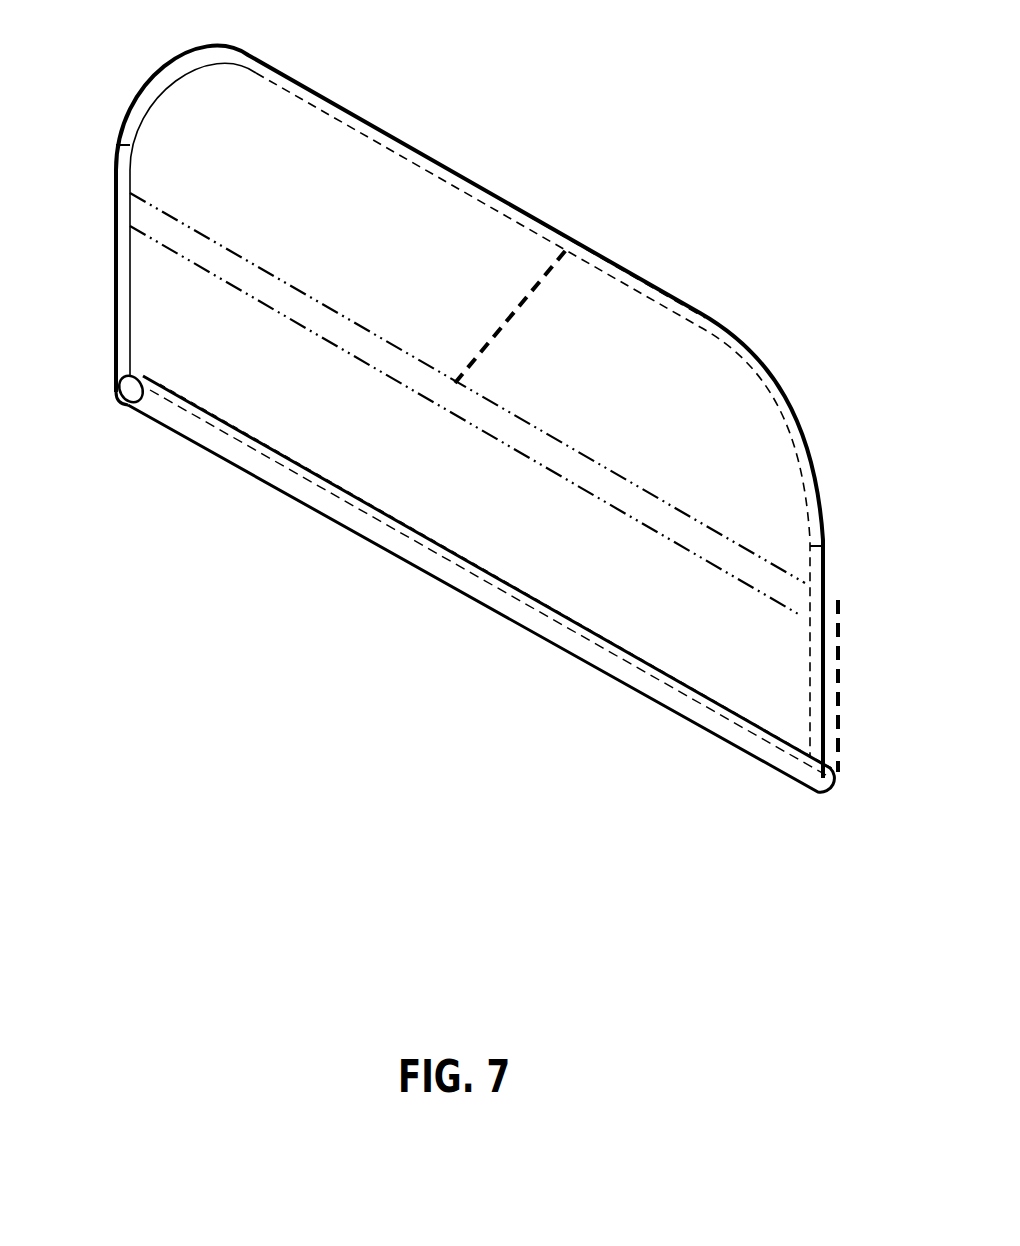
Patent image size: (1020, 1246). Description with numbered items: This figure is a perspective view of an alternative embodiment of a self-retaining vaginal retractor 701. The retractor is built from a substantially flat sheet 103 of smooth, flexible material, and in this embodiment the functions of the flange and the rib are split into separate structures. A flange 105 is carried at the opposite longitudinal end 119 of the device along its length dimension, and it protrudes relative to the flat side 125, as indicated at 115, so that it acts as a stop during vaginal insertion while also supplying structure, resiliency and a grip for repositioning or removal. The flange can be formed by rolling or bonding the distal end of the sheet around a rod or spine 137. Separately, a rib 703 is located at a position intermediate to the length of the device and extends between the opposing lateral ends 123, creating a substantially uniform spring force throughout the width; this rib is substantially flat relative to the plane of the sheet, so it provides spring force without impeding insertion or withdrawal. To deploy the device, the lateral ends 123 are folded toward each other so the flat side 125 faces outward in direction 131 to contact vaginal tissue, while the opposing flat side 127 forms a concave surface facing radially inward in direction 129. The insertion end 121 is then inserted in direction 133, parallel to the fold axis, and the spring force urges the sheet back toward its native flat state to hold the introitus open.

The retractor 701 is at (714, 256).
The rib 703 is at (213, 228).
The sheet 103 is at (768, 678).
The flange 105 is at (798, 782).
The protrusion of the rib relative to the flat side 115 is at (851, 668).
The opposite longitudinal end 119 is at (490, 619).
The insertion end 121 is at (483, 165).
The opposing lateral ends 123 is at (103, 171).
The flat side 125 is at (738, 477).
The opposing flat side 127 is at (652, 585).
The radially inward direction 129 is at (455, 385).
The outward direction 131 is at (566, 250).
The insertion direction 133 is at (420, 130).
The rod or spine 137 is at (652, 685).